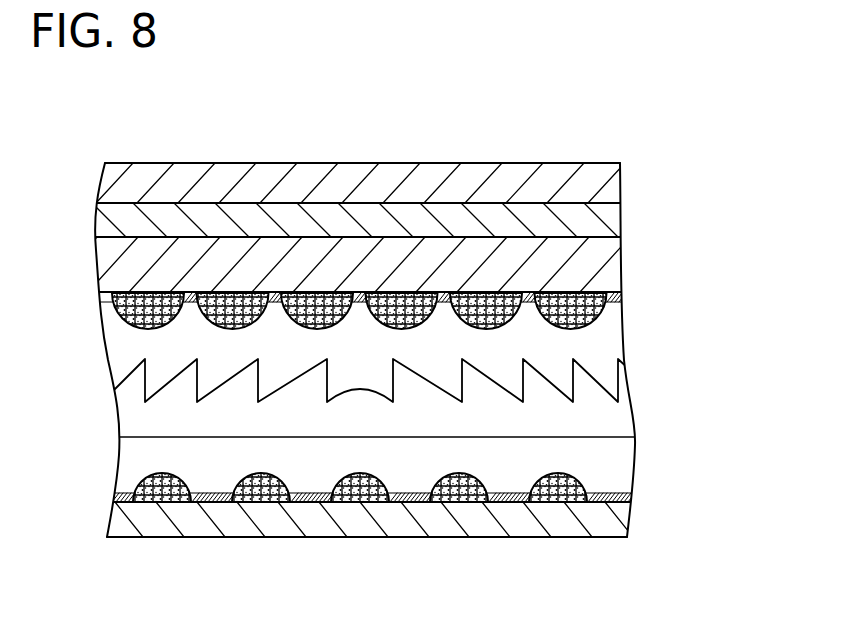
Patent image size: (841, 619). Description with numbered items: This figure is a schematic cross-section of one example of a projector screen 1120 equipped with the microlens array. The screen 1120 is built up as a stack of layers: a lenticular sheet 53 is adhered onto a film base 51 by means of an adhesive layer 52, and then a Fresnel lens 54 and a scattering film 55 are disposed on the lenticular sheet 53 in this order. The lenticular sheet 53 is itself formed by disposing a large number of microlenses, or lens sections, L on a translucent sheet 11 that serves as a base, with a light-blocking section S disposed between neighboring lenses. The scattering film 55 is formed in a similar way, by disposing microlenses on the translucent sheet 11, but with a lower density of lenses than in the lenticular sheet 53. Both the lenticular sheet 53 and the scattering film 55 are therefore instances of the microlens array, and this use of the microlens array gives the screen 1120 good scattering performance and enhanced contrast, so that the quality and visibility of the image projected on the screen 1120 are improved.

The projector screen 1120 is at (141, 132).
The film base 51 is at (615, 181).
The adhesive layer 52 is at (615, 216).
The translucent sheet 11 is at (608, 265).
The microlens L is at (604, 313).
The light-blocking section S is at (527, 297).
The lenticular sheet 53 is at (712, 245).
The Fresnel lens 54 is at (627, 415).
The scattering film 55 is at (712, 468).